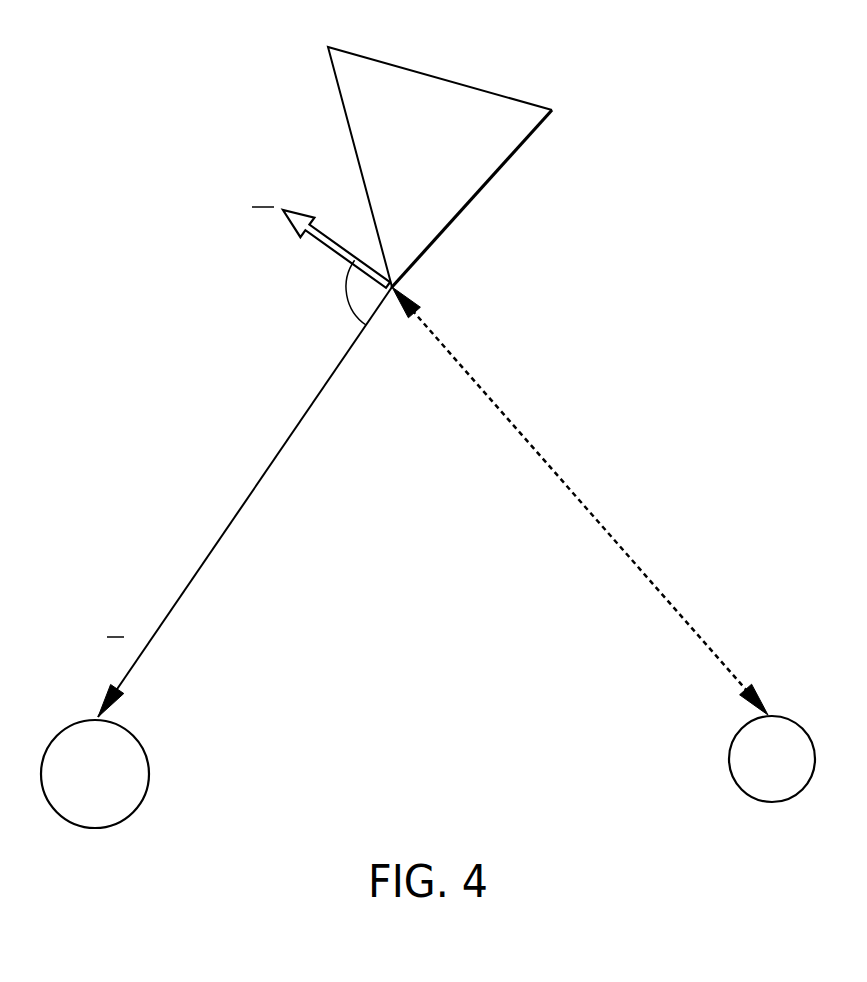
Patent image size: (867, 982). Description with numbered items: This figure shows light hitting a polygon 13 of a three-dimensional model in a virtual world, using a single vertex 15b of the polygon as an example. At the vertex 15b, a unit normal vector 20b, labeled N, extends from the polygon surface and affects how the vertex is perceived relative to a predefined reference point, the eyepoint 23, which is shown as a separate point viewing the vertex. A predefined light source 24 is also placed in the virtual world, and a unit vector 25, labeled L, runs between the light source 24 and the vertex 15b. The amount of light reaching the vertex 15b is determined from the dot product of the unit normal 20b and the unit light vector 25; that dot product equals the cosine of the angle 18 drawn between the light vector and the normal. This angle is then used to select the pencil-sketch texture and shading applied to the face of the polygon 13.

The polygon 13 is at (462, 182).
The vertex 15b is at (393, 284).
The angle 18 is at (346, 297).
The unit normal vector 20b is at (333, 247).
The eyepoint 23 is at (770, 800).
The light source 24 is at (92, 826).
The unit vector 25 is at (285, 440).